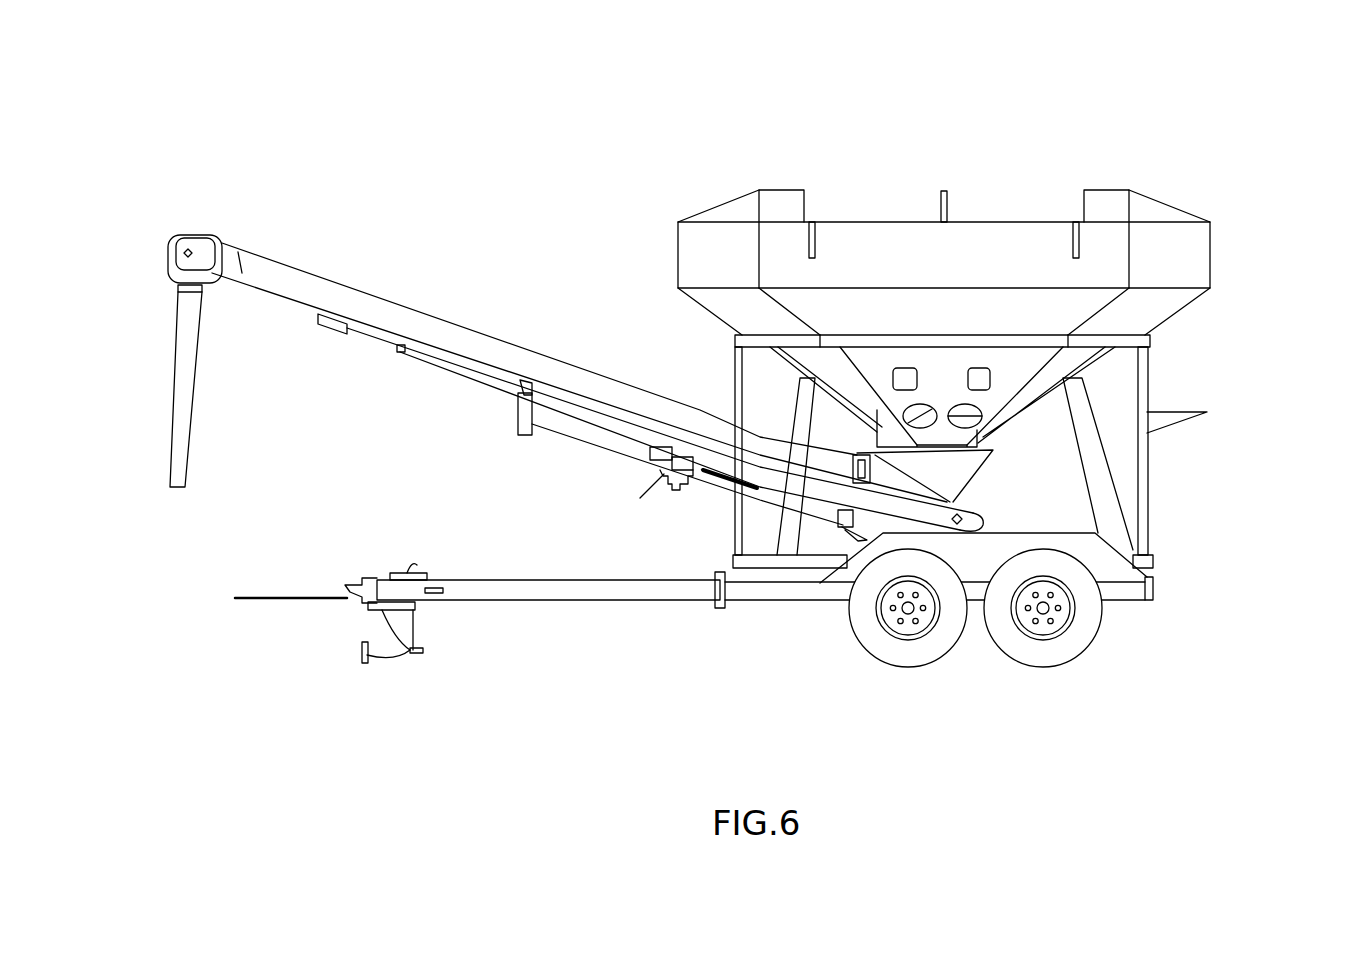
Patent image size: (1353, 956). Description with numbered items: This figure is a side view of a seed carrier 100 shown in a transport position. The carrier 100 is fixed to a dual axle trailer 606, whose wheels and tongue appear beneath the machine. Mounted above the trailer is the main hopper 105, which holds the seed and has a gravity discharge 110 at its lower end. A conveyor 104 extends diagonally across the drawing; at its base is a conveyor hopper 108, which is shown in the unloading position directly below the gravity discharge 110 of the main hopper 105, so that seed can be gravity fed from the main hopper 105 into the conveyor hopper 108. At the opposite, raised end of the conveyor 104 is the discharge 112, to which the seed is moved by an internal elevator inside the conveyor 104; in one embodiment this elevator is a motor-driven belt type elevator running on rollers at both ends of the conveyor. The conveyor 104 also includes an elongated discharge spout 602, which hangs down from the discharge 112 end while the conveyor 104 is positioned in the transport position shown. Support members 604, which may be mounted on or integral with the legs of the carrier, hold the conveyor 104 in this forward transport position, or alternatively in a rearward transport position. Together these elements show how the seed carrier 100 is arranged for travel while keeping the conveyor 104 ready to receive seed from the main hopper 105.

The seed carrier 100 is at (1214, 152).
The conveyor 104 is at (490, 330).
The main hopper 105 is at (1212, 255).
The conveyor hopper 108 is at (975, 473).
The gravity discharge 110 is at (1007, 430).
The discharge 112 is at (172, 238).
The elongated discharge spout 602 is at (170, 393).
The support members 604 is at (733, 500).
The dual axle trailer 606 is at (798, 607).